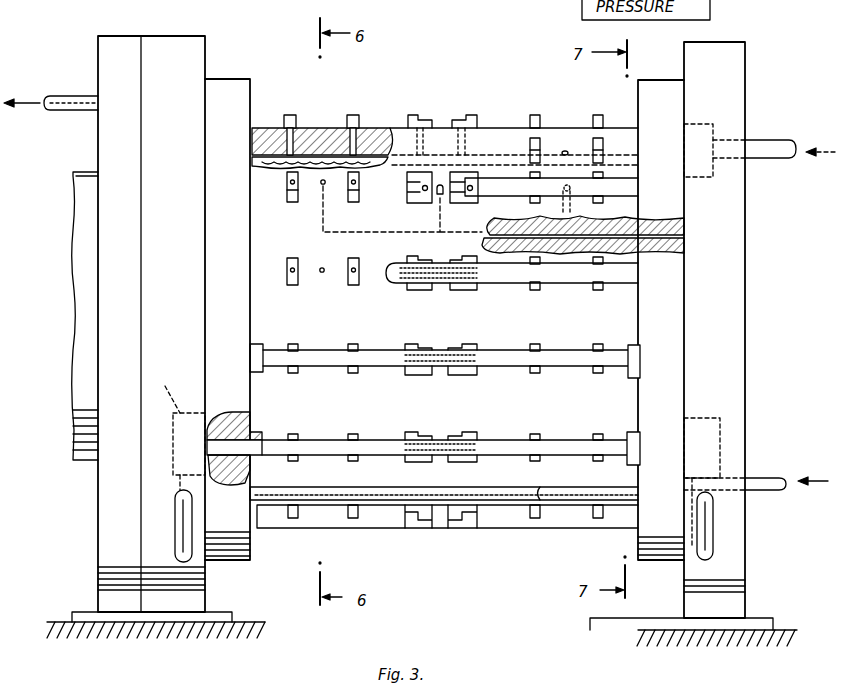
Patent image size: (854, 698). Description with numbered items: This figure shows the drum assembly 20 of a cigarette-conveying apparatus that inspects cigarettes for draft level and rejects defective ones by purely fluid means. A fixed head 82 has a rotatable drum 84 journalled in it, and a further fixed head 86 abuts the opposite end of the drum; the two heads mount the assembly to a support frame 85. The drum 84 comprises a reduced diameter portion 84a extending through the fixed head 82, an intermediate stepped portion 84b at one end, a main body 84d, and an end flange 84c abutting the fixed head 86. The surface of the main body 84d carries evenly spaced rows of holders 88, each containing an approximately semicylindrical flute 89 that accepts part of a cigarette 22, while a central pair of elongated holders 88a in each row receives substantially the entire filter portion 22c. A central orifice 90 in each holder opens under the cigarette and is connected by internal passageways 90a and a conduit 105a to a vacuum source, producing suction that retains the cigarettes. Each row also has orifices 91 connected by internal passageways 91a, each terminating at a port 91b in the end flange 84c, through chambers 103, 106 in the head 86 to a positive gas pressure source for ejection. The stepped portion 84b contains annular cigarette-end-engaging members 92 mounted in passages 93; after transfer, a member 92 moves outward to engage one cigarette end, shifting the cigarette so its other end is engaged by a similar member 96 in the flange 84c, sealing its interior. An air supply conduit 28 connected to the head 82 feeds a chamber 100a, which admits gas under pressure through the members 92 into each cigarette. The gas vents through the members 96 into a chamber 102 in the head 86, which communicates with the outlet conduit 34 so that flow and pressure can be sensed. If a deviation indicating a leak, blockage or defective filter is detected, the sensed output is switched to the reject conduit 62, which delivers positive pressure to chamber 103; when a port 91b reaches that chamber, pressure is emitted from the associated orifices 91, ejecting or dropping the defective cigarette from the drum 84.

The drum assembly 20 is at (762, 76).
The cigarette 22 is at (562, 370).
The filter portion 22c is at (441, 349).
The air supply conduit 28 is at (175, 506).
The outlet conduit 34 is at (713, 533).
The reject conduit 62 is at (768, 478).
The fixed head 82 is at (182, 72).
The rotatable drum 84 is at (379, 106).
The reduced diameter portion 84a is at (88, 176).
The intermediate stepped portion 84b is at (228, 84).
The end flange 84c is at (652, 80).
The main body 84d is at (498, 127).
The support frame 85 is at (60, 620).
The fixed head 86 is at (725, 79).
The holders 88 is at (352, 345).
The elongated holders 88a is at (464, 115).
The flute 89 is at (352, 115).
The central orifice 90 is at (276, 272).
The internal passageways 90a is at (252, 158).
The orifices 91 is at (320, 268).
The internal passageways 91a is at (618, 216).
The port 91b is at (685, 237).
The cigarette-end-engaging member 92 is at (252, 428).
The passage 93 is at (250, 476).
The end-engaging member 96 is at (631, 346).
The chamber 100a is at (178, 429).
The chamber 102 is at (720, 446).
The chamber 103 is at (690, 522).
The conduit 105a is at (62, 95).
The chamber 106 is at (713, 128).